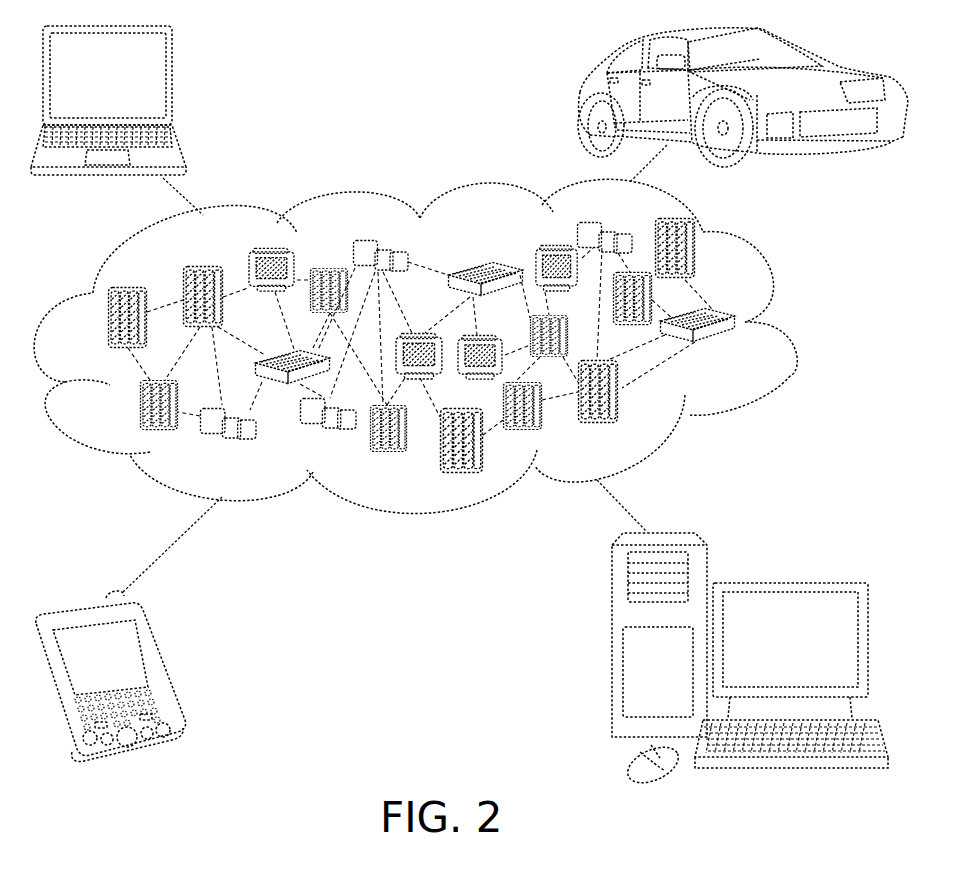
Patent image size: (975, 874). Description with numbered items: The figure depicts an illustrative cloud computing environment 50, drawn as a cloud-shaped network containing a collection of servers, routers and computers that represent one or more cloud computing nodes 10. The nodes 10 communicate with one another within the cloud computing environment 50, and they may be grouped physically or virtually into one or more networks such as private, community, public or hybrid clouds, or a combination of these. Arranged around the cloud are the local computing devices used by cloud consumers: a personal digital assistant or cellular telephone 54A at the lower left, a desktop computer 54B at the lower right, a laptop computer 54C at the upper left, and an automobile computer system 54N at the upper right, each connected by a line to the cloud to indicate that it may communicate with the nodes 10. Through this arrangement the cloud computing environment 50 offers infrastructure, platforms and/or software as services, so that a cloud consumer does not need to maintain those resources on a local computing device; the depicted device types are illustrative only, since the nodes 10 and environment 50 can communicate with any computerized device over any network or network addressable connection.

The cloud computing nodes 10 is at (733, 351).
The cloud computing environment 50 is at (787, 327).
The personal digital assistant (PDA) or cellular telephone 54A is at (162, 668).
The desktop computer 54B is at (790, 582).
The laptop computer 54C is at (172, 80).
The automobile computer system 54N is at (580, 99).